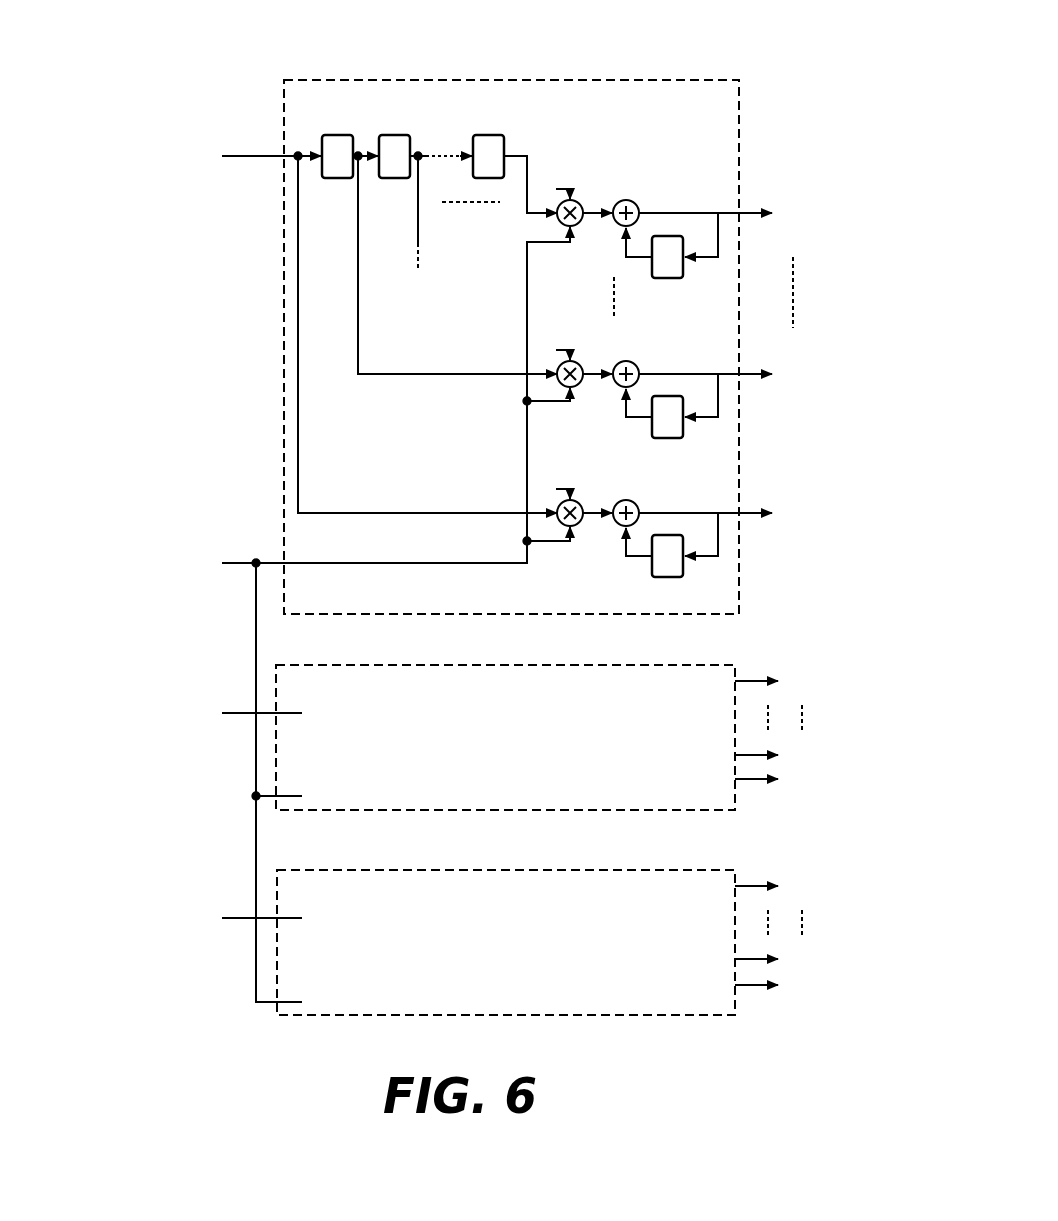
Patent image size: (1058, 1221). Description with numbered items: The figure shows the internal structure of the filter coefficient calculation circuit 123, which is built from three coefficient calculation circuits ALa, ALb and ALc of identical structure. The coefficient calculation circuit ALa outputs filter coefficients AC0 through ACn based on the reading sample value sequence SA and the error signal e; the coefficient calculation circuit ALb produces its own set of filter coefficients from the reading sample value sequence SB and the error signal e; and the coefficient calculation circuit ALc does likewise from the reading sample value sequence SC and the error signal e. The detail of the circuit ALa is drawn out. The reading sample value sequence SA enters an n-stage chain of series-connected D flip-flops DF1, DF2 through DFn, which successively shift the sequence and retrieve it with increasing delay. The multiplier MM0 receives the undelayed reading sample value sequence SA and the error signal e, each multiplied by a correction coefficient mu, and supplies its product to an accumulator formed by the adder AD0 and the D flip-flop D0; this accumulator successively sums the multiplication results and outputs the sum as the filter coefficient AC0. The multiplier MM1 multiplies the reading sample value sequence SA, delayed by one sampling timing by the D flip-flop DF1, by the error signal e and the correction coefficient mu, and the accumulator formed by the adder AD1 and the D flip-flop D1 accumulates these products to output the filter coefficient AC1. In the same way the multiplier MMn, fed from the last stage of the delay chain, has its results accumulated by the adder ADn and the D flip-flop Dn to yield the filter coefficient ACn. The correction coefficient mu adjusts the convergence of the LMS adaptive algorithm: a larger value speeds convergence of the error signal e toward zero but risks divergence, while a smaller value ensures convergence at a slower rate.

The filter coefficient calculation circuit 123 is at (304, 27).
The coefficient calculation circuit ALa is at (600, 79).
The coefficient calculation circuit ALb is at (603, 664).
The coefficient calculation circuit ALc is at (603, 869).
The D flip-flop DF1 is at (337, 135).
The D flip-flop DF2 is at (394, 135).
The D flip-flop DFn is at (488, 135).
The multiplier MMn is at (578, 203).
The multiplier MM1 is at (578, 364).
The multiplier MM0 is at (578, 503).
The adder ADn is at (639, 204).
The adder AD1 is at (639, 365).
The adder AD0 is at (639, 504).
The D flip-flop Dn is at (666, 278).
The D flip-flop D1 is at (666, 438).
The D flip-flop D0 is at (666, 577).
The reading sample value sequence SA is at (257, 159).
The reading sample value sequence SB is at (249, 715).
The reading sample value sequence SC is at (249, 920).
The error signal e is at (388, 614).
The filter coefficient ACn is at (724, 217).
The filter coefficient AC1 is at (724, 377).
The filter coefficient AC0 is at (724, 516).